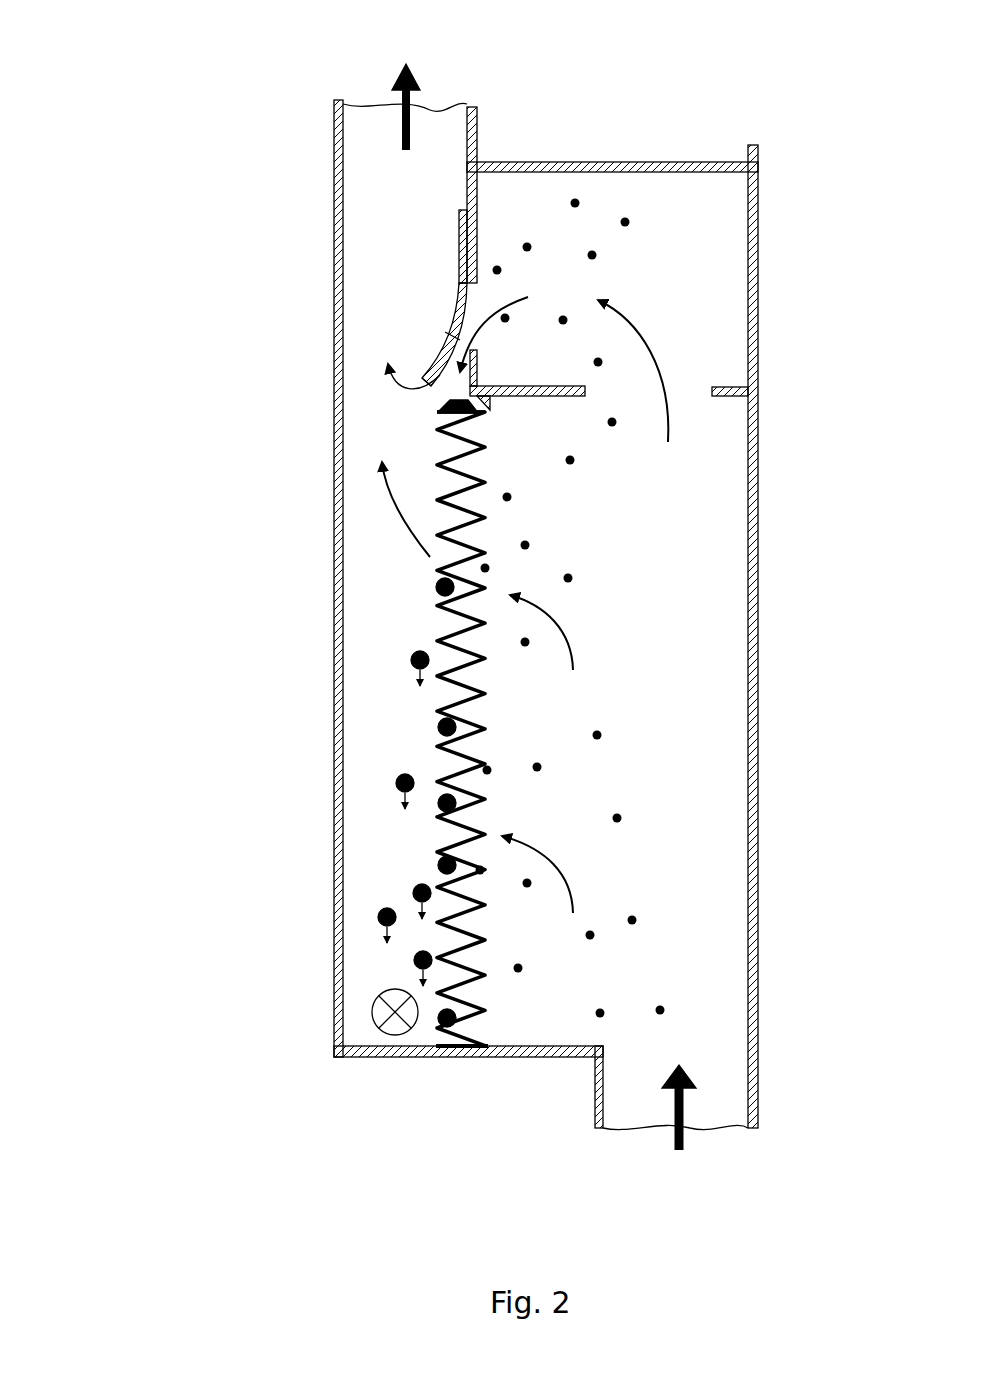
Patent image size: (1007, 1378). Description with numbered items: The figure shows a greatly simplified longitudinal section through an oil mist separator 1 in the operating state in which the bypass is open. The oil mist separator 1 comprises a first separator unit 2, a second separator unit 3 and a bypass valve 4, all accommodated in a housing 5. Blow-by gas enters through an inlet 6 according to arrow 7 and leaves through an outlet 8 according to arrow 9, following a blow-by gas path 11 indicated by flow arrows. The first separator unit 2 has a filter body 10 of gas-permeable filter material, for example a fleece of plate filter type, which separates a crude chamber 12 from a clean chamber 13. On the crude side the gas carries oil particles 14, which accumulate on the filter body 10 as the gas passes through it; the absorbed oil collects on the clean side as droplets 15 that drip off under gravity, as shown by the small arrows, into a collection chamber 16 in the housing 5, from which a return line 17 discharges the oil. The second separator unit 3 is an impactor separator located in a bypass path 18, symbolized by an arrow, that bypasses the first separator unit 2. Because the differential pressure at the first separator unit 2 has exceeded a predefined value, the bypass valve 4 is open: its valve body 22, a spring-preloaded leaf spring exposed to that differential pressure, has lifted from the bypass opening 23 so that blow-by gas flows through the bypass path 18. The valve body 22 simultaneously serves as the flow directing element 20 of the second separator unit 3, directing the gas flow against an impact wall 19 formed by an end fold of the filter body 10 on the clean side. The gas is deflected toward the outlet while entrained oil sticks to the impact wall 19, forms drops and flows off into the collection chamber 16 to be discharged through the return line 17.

The oil mist separator 1 is at (244, 108).
The first separator unit 2 is at (425, 626).
The second separator unit 3 is at (433, 268).
The bypass valve 4 is at (433, 332).
The housing 5 is at (334, 170).
The inlet 6 is at (635, 1110).
The arrow 7 is at (690, 1115).
The outlet 8 is at (372, 115).
The arrow 9 is at (413, 118).
The filter body 10 is at (460, 757).
The blow-by gas path 11 is at (395, 520).
The crude chamber 12 is at (692, 705).
The clean chamber 13 is at (394, 588).
The oil particles 14 is at (592, 255).
The droplets 15 is at (443, 863).
The collection chamber 16 is at (355, 990).
The return line 17 is at (395, 1020).
The bypass path 18 is at (455, 398).
The impact wall 19 is at (448, 405).
The flow directing element 20 is at (390, 390).
The valve body 22 is at (459, 246).
The bypass opening 23 is at (455, 305).